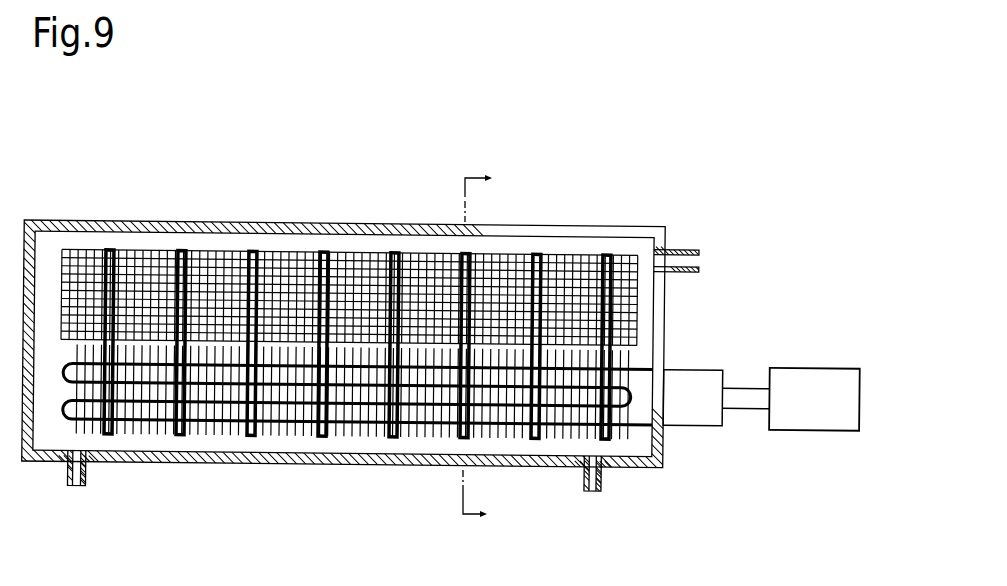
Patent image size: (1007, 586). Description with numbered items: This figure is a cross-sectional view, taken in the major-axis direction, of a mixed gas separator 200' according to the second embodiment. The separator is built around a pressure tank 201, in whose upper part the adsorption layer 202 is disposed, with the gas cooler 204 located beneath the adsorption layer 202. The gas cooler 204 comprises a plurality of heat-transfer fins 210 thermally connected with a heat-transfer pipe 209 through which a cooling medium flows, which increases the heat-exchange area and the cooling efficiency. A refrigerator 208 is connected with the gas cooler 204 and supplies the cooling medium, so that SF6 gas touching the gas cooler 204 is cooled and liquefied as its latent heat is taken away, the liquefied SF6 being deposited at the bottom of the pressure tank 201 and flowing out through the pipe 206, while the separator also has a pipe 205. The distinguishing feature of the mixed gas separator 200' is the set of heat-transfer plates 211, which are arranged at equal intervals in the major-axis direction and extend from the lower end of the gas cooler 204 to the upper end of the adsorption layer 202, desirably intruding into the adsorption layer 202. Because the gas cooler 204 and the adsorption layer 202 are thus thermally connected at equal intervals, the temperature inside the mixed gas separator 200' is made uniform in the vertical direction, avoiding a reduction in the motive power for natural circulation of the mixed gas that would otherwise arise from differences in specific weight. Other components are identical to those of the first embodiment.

The mixed gas separator 200' is at (436, 326).
The pressure tank 201 is at (277, 221).
The adsorption layer 202 is at (413, 254).
The gas cooler 204 is at (355, 437).
The pipe 205 is at (680, 250).
The pipe 206 is at (88, 483).
The refrigerator 208 is at (827, 368).
The heat-transfer pipe 209 is at (690, 427).
The heat-transfer fins 210 is at (222, 433).
The heat-transfer plates 211 is at (182, 250).